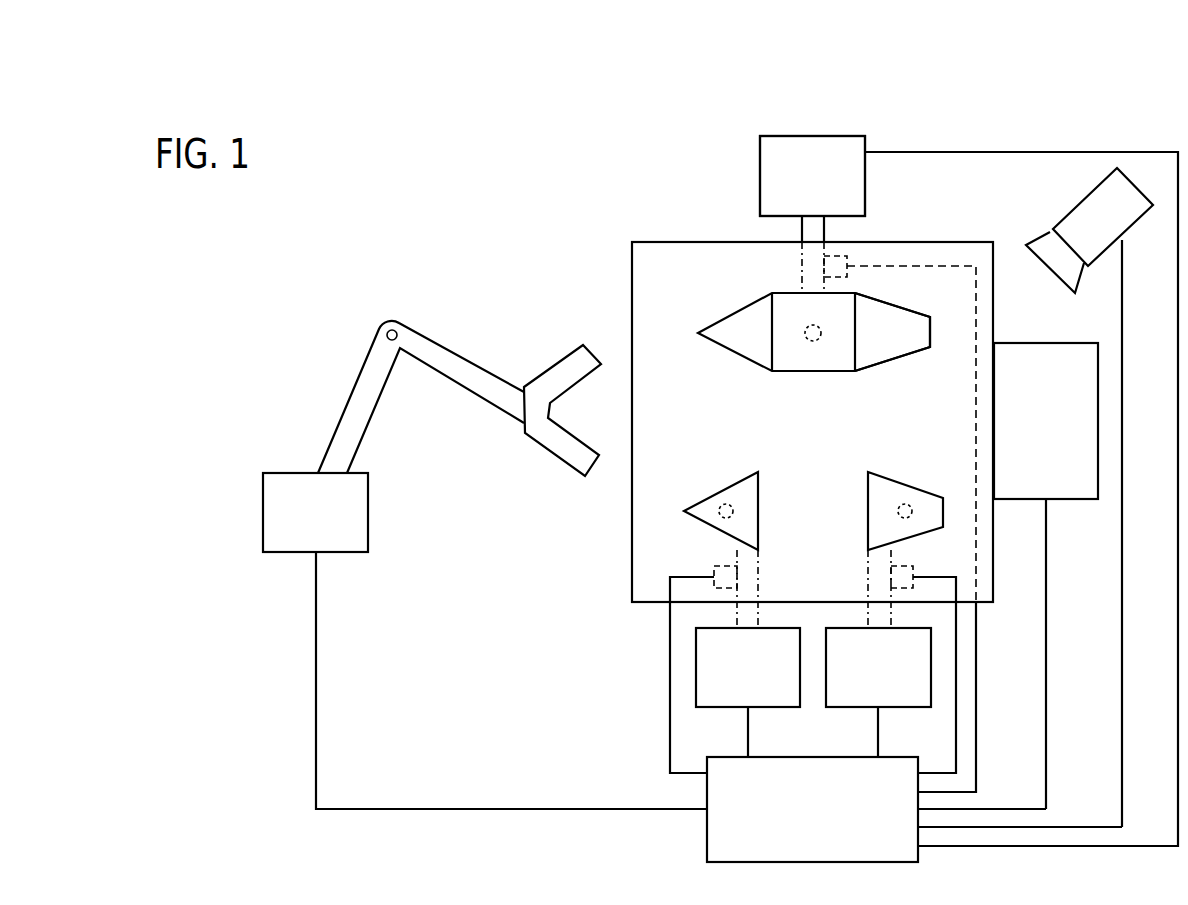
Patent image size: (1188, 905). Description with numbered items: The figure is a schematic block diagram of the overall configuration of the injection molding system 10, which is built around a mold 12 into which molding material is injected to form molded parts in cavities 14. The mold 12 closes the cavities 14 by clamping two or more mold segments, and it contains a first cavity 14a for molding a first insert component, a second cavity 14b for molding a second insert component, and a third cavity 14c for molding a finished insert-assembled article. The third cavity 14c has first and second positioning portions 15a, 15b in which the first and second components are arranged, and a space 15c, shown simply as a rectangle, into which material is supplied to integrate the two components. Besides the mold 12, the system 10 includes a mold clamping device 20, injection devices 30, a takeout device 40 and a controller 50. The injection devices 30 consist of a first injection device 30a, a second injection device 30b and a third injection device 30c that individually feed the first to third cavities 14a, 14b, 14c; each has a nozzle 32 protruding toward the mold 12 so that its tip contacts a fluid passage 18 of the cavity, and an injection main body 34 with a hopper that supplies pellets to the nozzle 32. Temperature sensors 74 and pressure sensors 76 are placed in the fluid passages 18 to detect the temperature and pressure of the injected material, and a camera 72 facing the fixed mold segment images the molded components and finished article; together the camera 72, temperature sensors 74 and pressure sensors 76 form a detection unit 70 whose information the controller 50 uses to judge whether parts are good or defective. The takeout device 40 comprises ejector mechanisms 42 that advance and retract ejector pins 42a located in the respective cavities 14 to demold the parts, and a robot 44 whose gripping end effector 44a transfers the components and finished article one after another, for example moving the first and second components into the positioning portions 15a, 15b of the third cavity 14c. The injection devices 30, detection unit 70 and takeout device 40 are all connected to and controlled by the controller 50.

The injection molding system 10 is at (182, 248).
The mold 12 is at (655, 228).
The cavities 14 is at (734, 411).
The first cavity 14a is at (712, 497).
The second cavity 14b is at (917, 498).
The third cavity 14c is at (718, 320).
The first positioning portion 15a is at (742, 340).
The second positioning portion 15b is at (885, 340).
The space 15c is at (818, 355).
The fluid passages 18 is at (817, 280).
The mold clamping device 20 is at (1073, 500).
The injection devices 30 is at (813, 692).
The first injection device 30a is at (696, 663).
The second injection device 30b is at (931, 663).
The third injection device 30c is at (847, 179).
The nozzle 32 is at (812, 227).
The injection main body 34 is at (778, 162).
The takeout device 40 is at (432, 427).
The ejector mechanisms 42 is at (796, 390).
The ejector pins 42a is at (807, 326).
The robot 44 is at (368, 512).
The end effector 44a is at (543, 452).
The controller 50 is at (707, 832).
The detection unit 70 is at (826, 467).
The camera 72 is at (1086, 197).
The temperature sensors 74 is at (848, 263).
The pressure sensors 76 is at (744, 414).